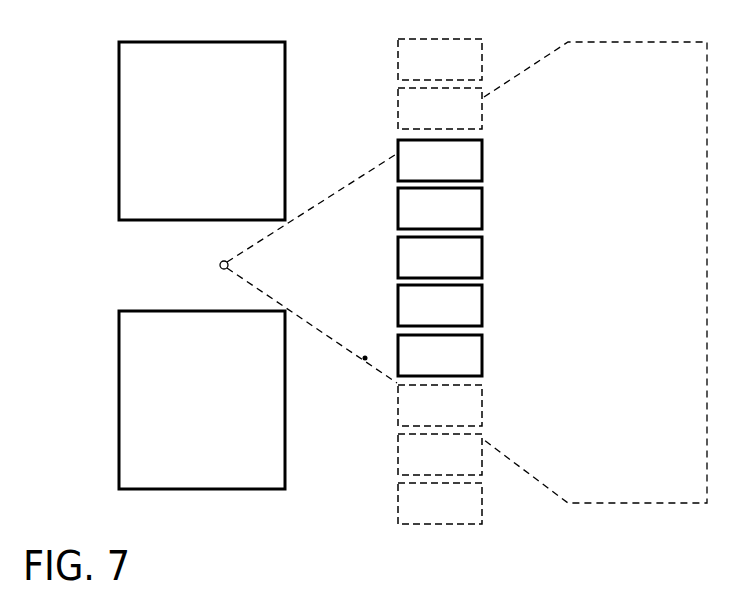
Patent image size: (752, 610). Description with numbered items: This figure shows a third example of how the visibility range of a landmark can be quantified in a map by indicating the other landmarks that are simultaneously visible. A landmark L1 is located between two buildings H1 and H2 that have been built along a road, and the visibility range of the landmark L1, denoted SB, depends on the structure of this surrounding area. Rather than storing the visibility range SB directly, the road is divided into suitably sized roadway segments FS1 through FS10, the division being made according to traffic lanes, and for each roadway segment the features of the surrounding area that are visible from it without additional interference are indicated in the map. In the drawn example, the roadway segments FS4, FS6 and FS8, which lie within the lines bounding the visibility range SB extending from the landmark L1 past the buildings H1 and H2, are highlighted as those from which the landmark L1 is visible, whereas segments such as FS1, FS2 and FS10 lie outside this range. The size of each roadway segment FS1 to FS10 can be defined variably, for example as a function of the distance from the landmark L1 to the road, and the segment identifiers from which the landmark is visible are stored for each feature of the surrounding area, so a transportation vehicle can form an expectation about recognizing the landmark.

The building H1 is at (120, 409).
The building H2 is at (120, 121).
The landmark L1 is at (220, 267).
The visibility range SB is at (365, 358).
The roadway segment FS1 is at (480, 501).
The roadway segment FS2 is at (480, 457).
The roadway segment FS4 is at (480, 353).
The roadway segment FS6 is at (480, 255).
The roadway segment FS8 is at (480, 153).
The roadway segment FS10 is at (480, 51).